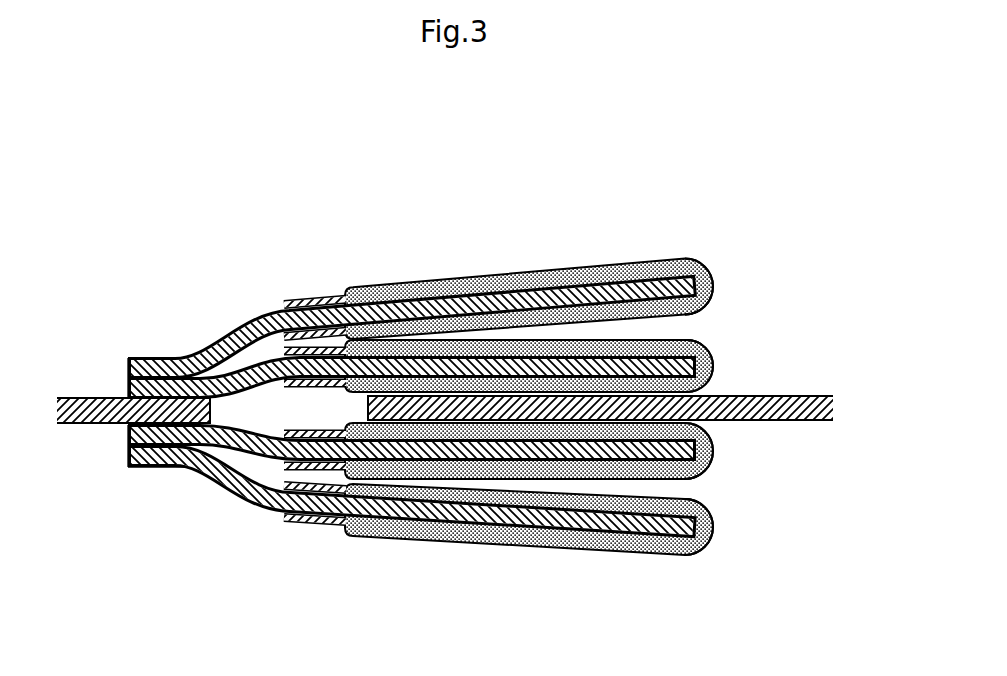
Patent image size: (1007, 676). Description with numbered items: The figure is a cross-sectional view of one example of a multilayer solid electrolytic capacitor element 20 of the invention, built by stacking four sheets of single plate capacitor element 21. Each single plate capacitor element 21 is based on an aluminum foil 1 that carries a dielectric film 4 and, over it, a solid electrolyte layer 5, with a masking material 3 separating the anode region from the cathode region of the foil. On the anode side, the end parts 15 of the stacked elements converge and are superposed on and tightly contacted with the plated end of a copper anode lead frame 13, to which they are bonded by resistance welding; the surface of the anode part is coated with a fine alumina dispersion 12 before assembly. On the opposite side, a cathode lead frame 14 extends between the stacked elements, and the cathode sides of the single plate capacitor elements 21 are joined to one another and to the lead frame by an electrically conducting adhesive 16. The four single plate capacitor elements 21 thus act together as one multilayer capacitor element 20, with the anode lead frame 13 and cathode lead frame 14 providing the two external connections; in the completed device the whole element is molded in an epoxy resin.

The aluminum foil 1 is at (240, 332).
The masking material 3 is at (283, 300).
The dielectric film 4 is at (193, 357).
The solid electrolyte layer 5 is at (403, 283).
The alumina dispersion coating 12 is at (160, 357).
The anode lead frame 13 is at (67, 424).
The cathode lead frame 14 is at (787, 400).
The end part in the anode side 15 is at (185, 480).
The electrically conducting adhesive 16 is at (680, 333).
The multilayer capacitor element 20 is at (632, 165).
The single plate capacitor element 21 is at (718, 280).